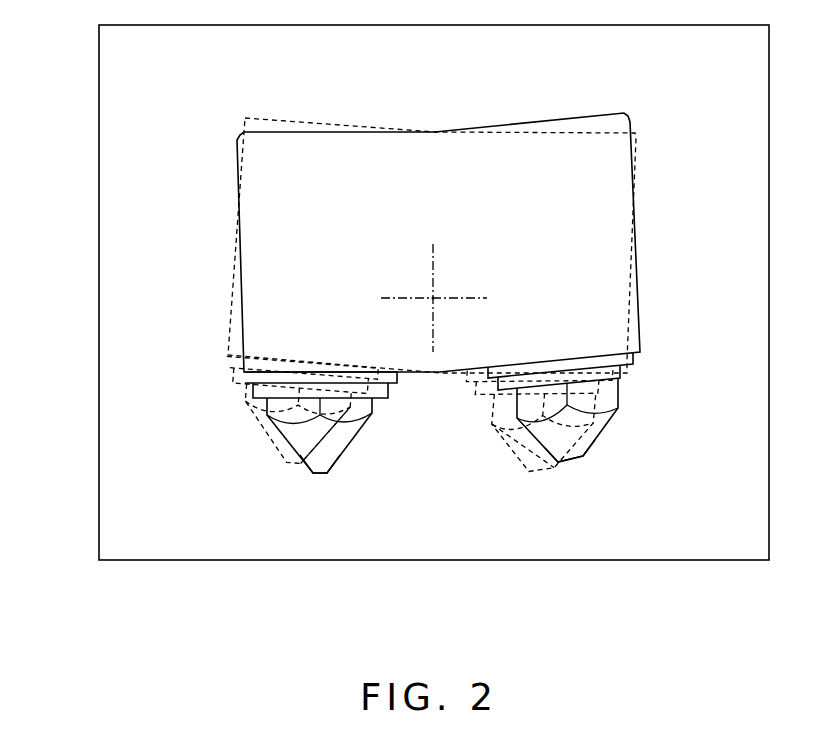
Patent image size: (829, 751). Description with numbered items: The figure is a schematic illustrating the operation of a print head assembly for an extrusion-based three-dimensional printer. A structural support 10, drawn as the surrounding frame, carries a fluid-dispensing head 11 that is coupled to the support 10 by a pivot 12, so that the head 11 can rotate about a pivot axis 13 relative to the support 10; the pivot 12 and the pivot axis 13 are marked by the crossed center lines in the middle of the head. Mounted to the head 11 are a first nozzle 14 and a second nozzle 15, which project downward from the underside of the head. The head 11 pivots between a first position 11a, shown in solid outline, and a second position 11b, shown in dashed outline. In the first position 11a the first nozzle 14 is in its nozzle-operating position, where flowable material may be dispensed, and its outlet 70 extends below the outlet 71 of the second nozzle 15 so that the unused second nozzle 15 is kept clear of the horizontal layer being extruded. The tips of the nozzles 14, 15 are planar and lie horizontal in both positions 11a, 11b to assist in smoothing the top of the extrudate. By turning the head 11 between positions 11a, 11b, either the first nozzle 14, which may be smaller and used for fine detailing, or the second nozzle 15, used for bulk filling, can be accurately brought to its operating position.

The support 10 is at (120, 240).
The fluid-dispensing head 11 is at (492, 295).
The first position 11a is at (244, 131).
The second position 11b is at (256, 114).
The pivot 12 is at (436, 293).
The pivot axis 13 is at (433, 298).
The first nozzle 14 is at (322, 473).
The second nozzle 15 is at (557, 460).
The outlet 70 is at (307, 478).
The outlet 71 is at (578, 462).